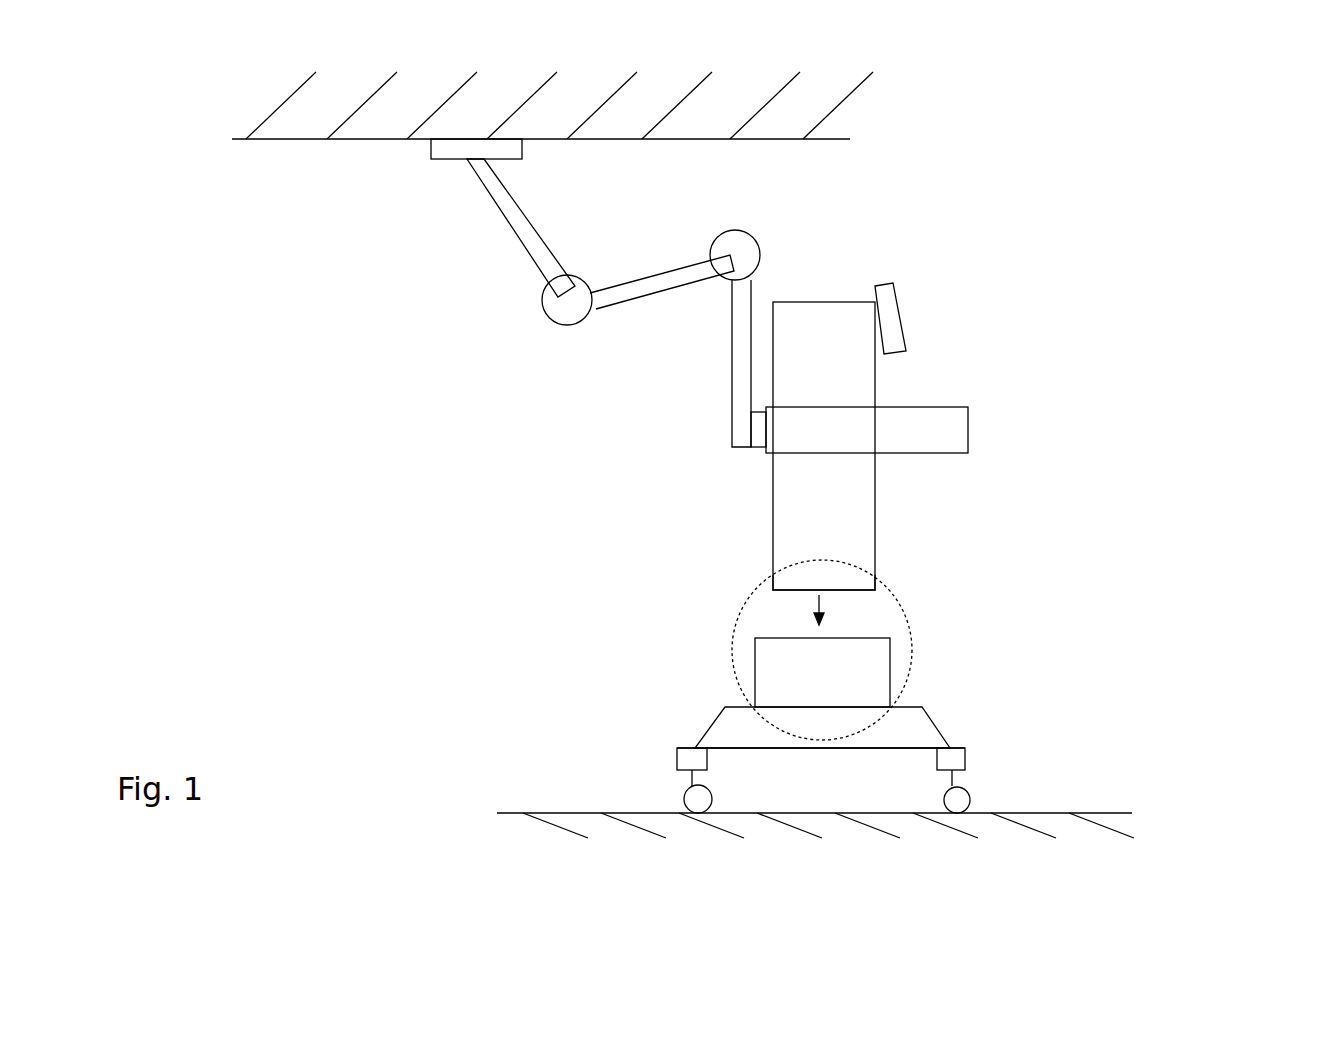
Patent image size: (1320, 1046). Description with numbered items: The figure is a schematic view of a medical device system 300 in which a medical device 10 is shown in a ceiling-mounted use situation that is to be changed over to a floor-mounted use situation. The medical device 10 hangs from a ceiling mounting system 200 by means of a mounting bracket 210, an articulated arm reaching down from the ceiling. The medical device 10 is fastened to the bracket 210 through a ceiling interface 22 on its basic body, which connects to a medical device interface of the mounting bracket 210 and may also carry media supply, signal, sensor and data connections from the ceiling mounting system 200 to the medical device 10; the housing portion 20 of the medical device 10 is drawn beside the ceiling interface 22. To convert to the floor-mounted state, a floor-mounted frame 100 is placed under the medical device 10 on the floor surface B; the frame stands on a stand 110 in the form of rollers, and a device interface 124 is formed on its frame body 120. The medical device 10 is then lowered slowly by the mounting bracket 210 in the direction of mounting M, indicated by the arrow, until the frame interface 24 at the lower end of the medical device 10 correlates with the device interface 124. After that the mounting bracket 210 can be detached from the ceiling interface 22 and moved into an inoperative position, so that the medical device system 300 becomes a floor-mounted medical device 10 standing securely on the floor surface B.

The medical device system 300 is at (1188, 563).
The ceiling mounting system 200 is at (384, 236).
The mounting bracket 210 is at (540, 253).
The medical device 10 is at (1002, 432).
The housing 20 is at (888, 450).
The ceiling interface 22 is at (757, 447).
The frame interface 24 is at (860, 582).
The floor-mounted frame 100 is at (988, 720).
The frame body 120 is at (718, 724).
The device interface 124 is at (770, 671).
The stand 110 is at (700, 803).
The floor surface B is at (505, 813).